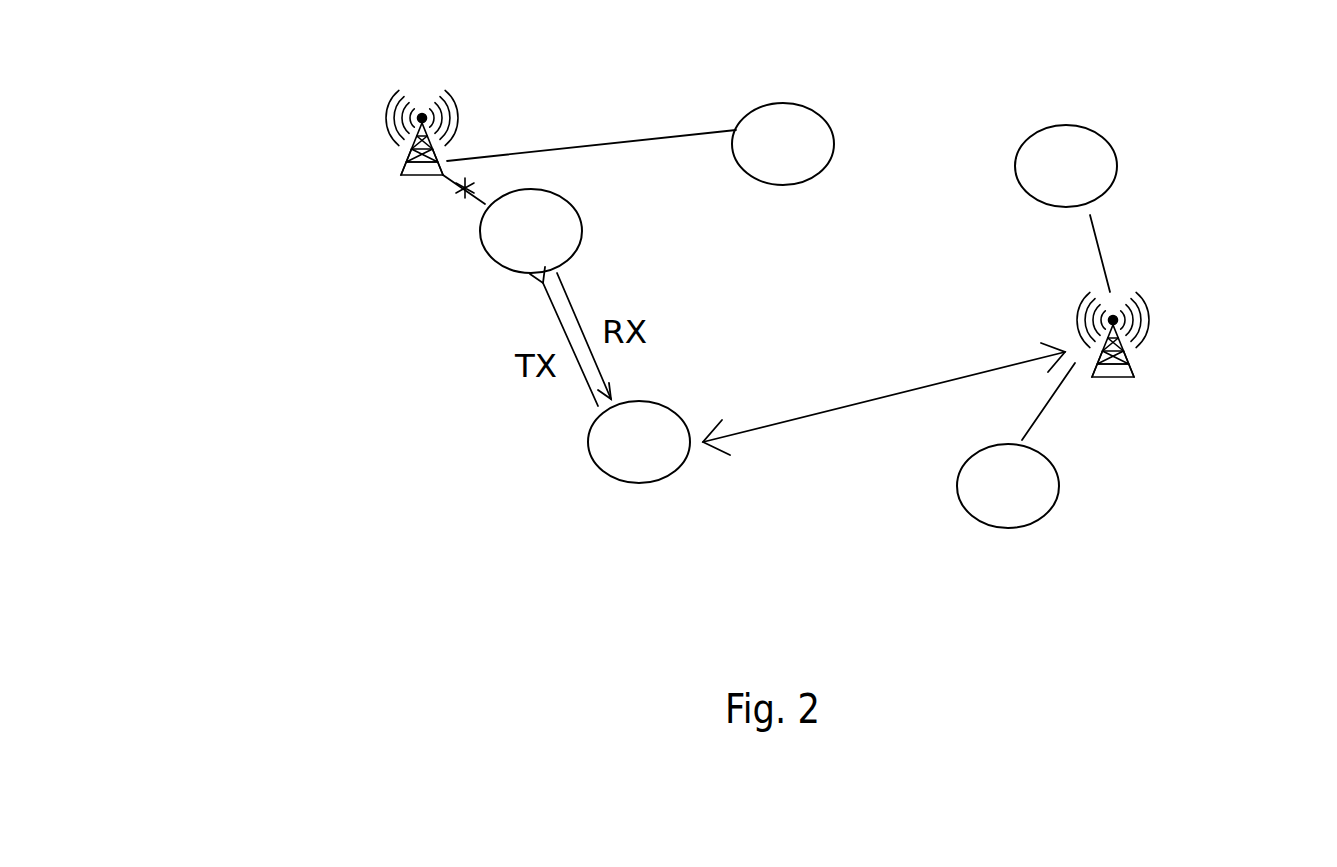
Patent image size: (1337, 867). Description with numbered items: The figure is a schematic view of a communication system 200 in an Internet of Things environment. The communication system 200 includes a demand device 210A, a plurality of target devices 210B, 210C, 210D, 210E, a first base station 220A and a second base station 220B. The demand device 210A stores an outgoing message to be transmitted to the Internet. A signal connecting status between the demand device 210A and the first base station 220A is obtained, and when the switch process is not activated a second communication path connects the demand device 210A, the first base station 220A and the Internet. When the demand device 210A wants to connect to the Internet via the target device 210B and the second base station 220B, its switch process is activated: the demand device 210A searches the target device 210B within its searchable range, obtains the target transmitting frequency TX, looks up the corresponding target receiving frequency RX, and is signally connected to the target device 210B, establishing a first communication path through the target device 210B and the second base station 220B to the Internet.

The communication system 200 is at (251, 91).
The demand device 210A is at (497, 263).
The target device 210B is at (588, 446).
The target device 210C is at (1060, 485).
The target device 210D is at (837, 144).
The target device 210E is at (1120, 165).
The first base station 220A is at (397, 158).
The second base station 220B is at (1150, 363).